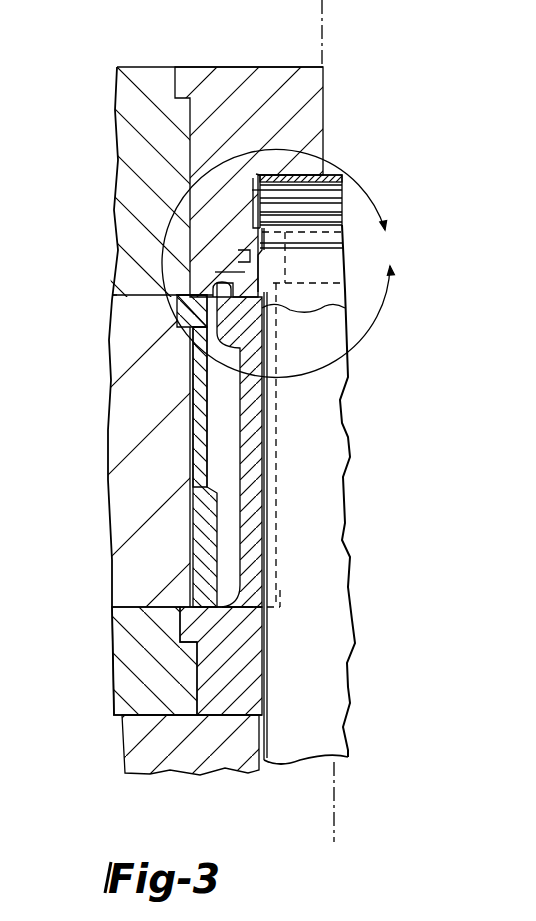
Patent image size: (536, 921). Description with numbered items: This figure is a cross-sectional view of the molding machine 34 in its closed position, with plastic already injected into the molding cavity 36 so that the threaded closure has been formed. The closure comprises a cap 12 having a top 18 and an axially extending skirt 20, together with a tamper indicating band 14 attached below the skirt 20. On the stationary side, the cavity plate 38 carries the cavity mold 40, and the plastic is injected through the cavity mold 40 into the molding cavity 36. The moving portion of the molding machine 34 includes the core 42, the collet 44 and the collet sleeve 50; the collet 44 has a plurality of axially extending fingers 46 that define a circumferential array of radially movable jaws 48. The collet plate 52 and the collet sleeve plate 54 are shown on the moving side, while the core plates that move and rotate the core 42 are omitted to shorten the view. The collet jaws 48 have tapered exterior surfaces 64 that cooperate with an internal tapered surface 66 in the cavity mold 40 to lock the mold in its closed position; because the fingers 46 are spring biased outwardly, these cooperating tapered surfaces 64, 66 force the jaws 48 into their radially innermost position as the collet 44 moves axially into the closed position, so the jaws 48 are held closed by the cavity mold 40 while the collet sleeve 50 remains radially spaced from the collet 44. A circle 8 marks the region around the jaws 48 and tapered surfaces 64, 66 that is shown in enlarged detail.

The detail circle for FIG. 8 is at (280, 263).
The cap 12 is at (349, 216).
The tamper indicating band 14 is at (250, 226).
The top 18 is at (293, 176).
The skirt 20 is at (252, 190).
The molding machine 34 is at (110, 298).
The molding cavity 36 is at (256, 174).
The cavity plate 38 is at (119, 203).
The cavity mold 40 is at (240, 66).
The core 42 is at (322, 692).
The collet 44 is at (197, 662).
The fingers 46 is at (243, 521).
The jaws 48 is at (238, 256).
The collet sleeve 50 is at (193, 416).
The collet plate 52 is at (134, 629).
The collet sleeve plate 54 is at (122, 479).
The tapered exterior surface 64 is at (215, 279).
The internal tapered surface 66 is at (213, 302).